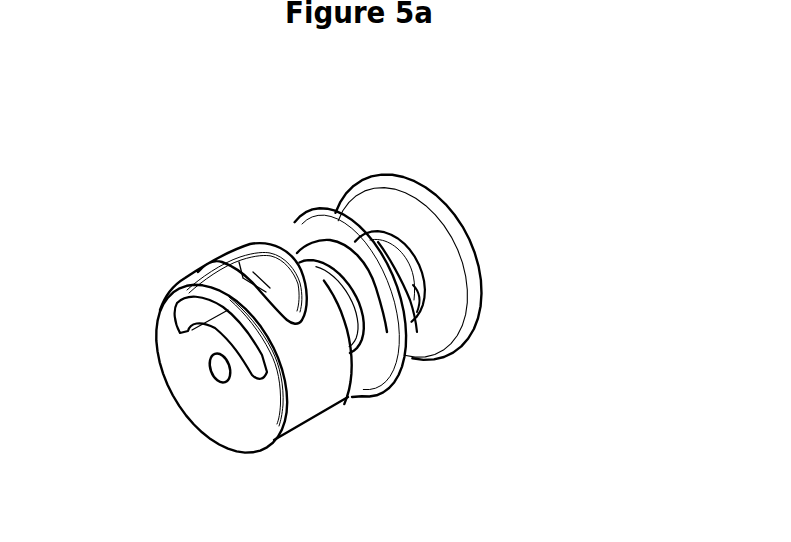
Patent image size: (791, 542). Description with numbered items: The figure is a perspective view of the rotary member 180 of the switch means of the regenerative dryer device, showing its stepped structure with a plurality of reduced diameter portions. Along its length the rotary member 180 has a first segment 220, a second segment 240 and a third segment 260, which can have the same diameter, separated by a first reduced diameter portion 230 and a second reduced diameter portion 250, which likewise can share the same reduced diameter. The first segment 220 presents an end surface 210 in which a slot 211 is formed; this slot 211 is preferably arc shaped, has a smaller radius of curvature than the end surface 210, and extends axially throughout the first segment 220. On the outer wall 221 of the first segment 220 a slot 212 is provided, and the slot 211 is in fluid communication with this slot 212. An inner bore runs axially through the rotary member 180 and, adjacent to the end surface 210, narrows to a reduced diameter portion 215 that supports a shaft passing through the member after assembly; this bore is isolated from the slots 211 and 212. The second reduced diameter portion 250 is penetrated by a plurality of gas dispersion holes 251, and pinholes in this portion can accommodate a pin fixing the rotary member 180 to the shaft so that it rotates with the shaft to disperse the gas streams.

The rotary member 180 is at (542, 272).
The end surface 210 is at (217, 400).
The slot 211 is at (190, 315).
The slot 212 is at (245, 262).
The reduced diameter portion 215 is at (213, 367).
The first segment 220 is at (303, 417).
The outer wall 221 is at (327, 383).
The first reduced diameter portion 230 is at (333, 312).
The second segment 240 is at (400, 367).
The second reduced diameter portion 250 is at (406, 270).
The gas dispersion holes 251 is at (411, 297).
The third segment 260 is at (468, 330).